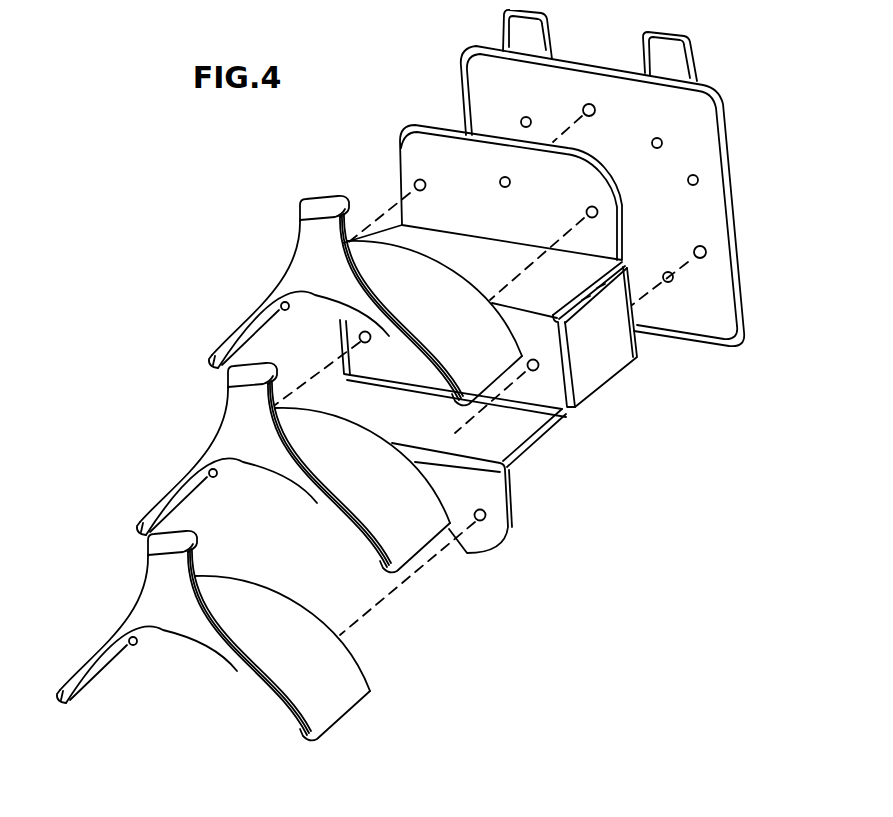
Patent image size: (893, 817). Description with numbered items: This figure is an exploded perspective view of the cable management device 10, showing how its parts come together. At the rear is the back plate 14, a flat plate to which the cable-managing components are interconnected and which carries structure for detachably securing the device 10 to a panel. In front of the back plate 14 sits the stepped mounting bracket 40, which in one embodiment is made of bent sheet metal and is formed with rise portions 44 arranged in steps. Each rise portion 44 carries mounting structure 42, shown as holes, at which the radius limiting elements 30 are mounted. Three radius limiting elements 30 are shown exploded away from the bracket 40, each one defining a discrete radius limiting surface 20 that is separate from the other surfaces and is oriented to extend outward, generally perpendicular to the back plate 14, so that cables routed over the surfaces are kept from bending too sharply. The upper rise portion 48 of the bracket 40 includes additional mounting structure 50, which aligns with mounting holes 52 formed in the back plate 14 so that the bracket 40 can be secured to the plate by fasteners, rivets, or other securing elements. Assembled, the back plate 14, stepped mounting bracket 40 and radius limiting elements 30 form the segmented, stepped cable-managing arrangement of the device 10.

The cable management device 10 is at (635, 540).
The back plate 14 is at (730, 131).
The radius limiting surface 20 is at (437, 283).
The radius limiting element 30 is at (238, 311).
The stepped mounting bracket 40 is at (615, 372).
The mounting structure 42 is at (415, 183).
The rise portion 44 is at (442, 143).
The upper rise portion 48 is at (423, 143).
The additional mounting structure 50 is at (511, 182).
The mounting hole 52 is at (591, 103).